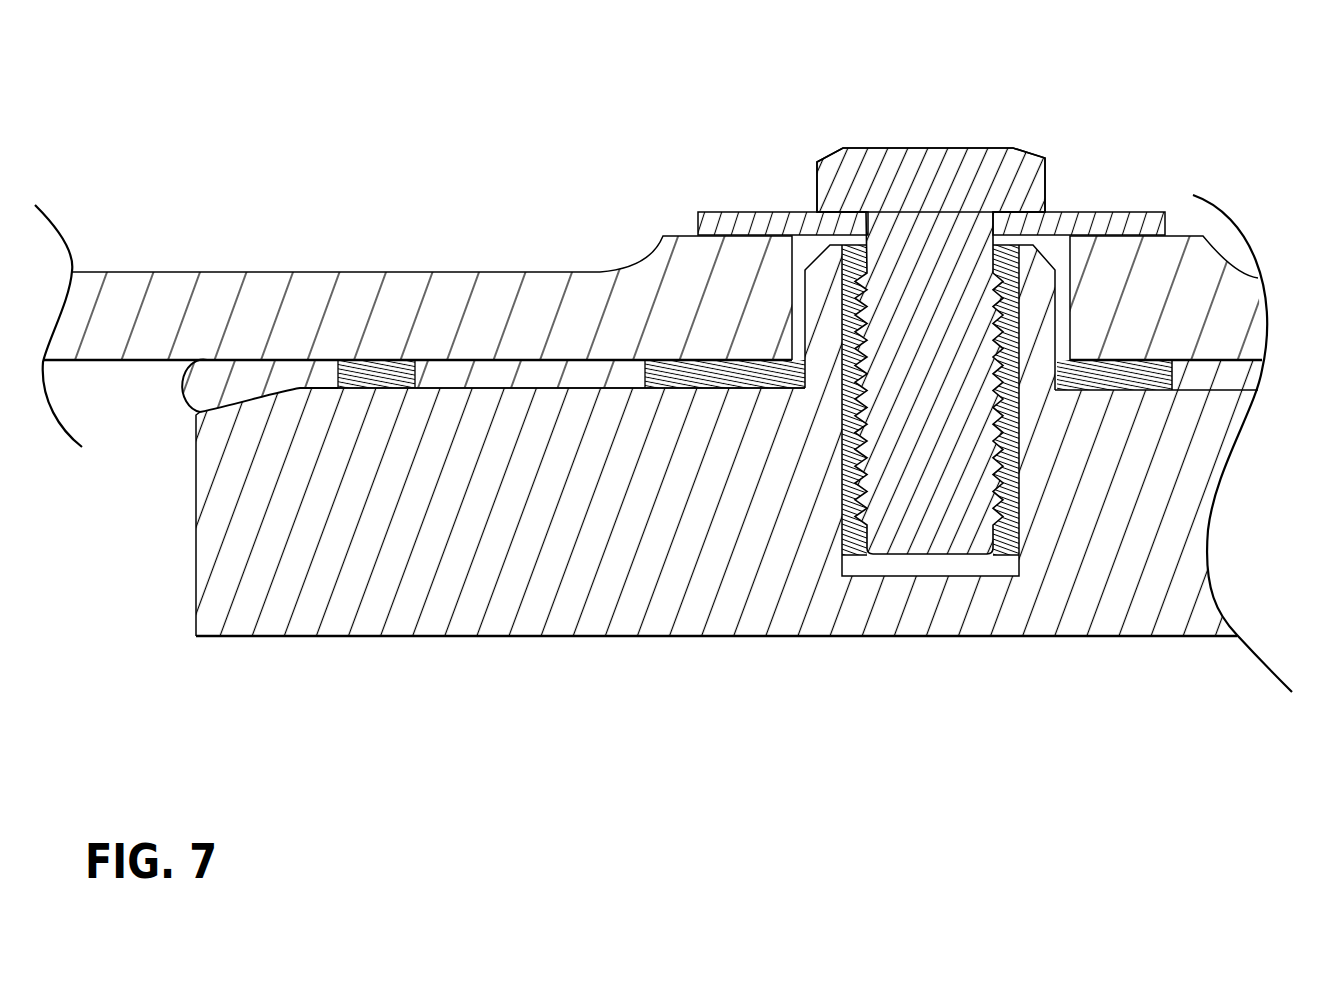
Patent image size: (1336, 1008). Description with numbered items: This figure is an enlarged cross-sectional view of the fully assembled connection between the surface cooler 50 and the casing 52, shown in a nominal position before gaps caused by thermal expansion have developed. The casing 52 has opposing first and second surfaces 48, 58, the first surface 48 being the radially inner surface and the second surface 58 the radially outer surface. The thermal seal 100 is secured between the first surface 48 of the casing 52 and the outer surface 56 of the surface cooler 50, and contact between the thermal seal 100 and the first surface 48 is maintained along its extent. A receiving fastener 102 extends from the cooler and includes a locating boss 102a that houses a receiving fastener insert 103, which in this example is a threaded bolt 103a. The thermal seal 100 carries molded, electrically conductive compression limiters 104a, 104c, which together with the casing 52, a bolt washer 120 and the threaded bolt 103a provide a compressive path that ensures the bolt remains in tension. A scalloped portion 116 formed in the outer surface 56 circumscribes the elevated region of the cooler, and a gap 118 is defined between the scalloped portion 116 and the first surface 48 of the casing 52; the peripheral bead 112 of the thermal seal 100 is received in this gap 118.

The first surface 48 is at (150, 360).
The surface cooler 50 is at (412, 587).
The casing 52 is at (125, 293).
The outer surface 56 is at (571, 388).
The second surface 58 is at (690, 262).
The thermal seal 100 is at (496, 375).
The receiving fastener 102 is at (1033, 298).
The locating boss 102a is at (1020, 452).
The receiving fastener insert 103 is at (922, 148).
The threaded bolt 103a is at (898, 235).
The compression limiter 104a is at (732, 390).
The compression limiter 104c is at (382, 365).
The peripheral bead 112 is at (248, 375).
The scalloped portion 116 is at (257, 407).
The gap 118 is at (177, 395).
The bolt washer 120 is at (794, 230).